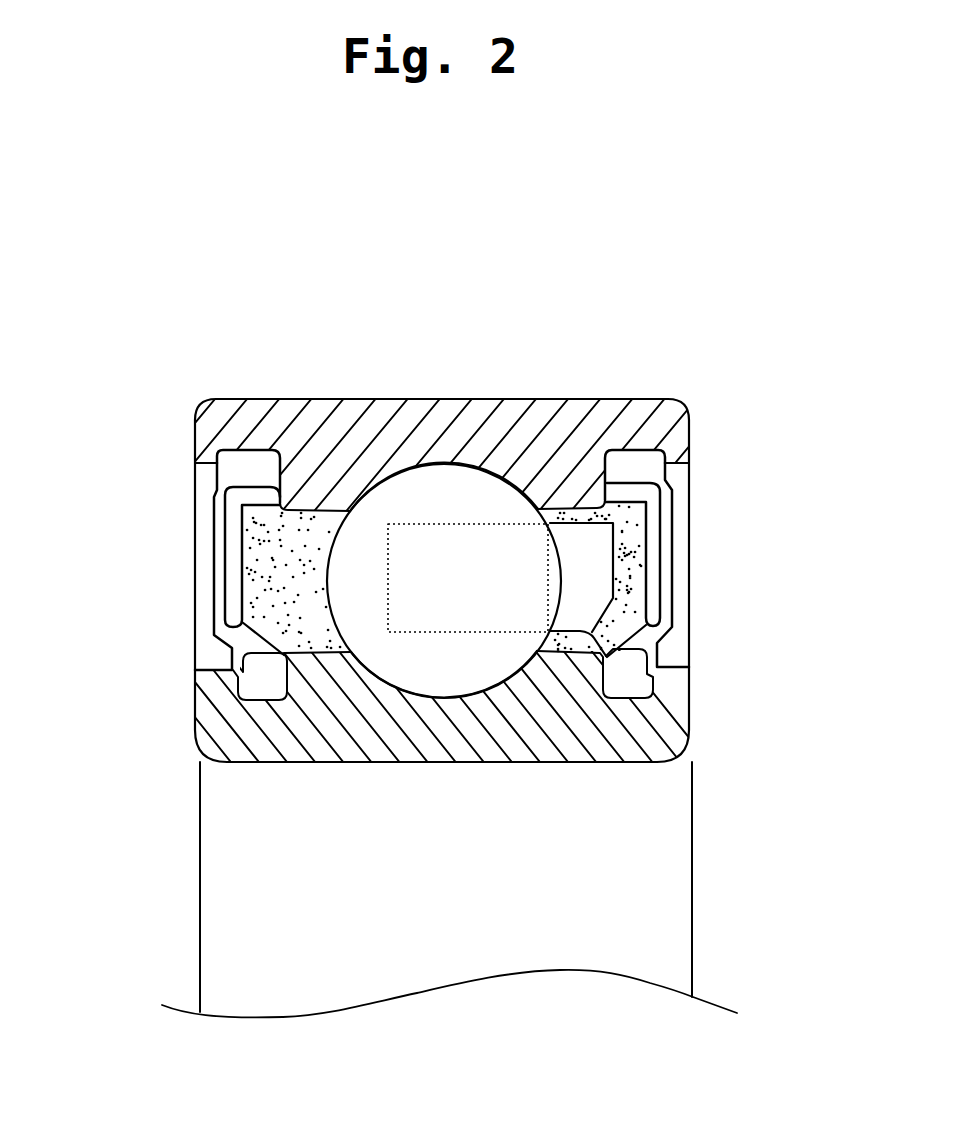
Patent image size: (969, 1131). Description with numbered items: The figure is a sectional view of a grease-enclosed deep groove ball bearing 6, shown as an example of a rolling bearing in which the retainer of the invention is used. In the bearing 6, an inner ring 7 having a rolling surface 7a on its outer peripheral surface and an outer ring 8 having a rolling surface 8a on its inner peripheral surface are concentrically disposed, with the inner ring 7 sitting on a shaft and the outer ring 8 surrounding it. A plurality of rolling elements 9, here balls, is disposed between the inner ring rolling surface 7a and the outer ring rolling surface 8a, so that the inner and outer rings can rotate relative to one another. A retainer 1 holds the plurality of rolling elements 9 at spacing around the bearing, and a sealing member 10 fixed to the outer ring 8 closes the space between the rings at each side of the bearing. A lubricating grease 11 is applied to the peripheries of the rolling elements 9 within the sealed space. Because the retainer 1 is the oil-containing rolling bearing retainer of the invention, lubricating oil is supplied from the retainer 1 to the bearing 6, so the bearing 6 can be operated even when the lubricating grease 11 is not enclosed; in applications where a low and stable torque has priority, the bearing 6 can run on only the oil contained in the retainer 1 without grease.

The retainer 1 is at (590, 600).
The grease-enclosed deep groove ball bearing 6 is at (420, 579).
The inner ring 7 is at (630, 722).
The inner ring rolling surface 7a is at (440, 697).
The outer ring 8 is at (568, 427).
The outer ring rolling surface 8a is at (462, 468).
The rolling elements 9 is at (390, 503).
The sealing member 10 is at (213, 532).
The lubricating grease 11 is at (255, 585).